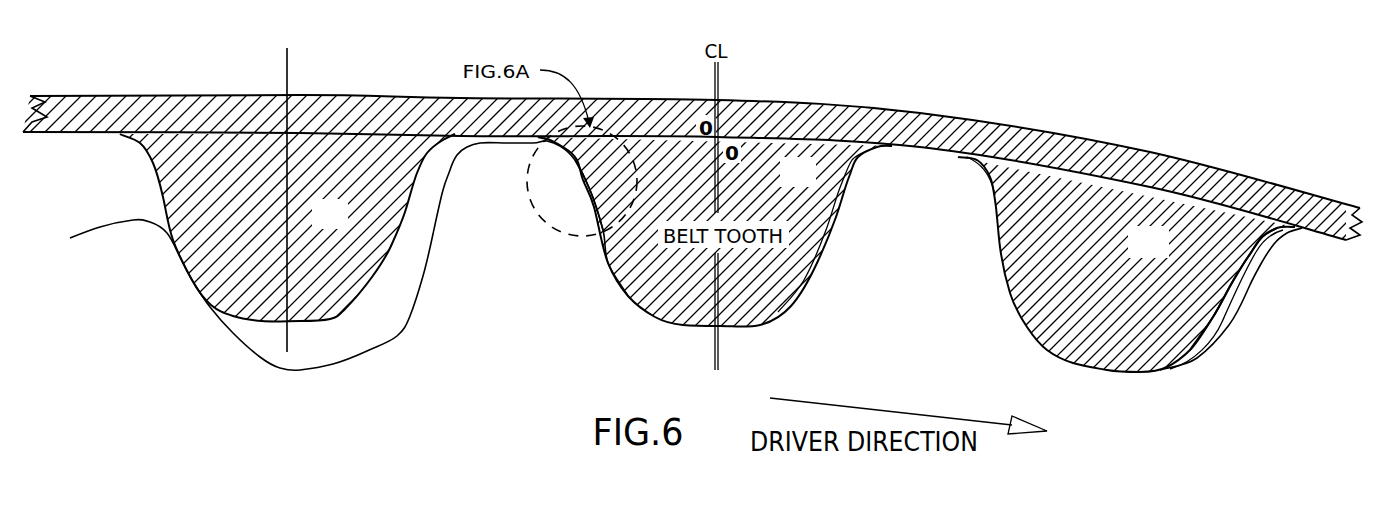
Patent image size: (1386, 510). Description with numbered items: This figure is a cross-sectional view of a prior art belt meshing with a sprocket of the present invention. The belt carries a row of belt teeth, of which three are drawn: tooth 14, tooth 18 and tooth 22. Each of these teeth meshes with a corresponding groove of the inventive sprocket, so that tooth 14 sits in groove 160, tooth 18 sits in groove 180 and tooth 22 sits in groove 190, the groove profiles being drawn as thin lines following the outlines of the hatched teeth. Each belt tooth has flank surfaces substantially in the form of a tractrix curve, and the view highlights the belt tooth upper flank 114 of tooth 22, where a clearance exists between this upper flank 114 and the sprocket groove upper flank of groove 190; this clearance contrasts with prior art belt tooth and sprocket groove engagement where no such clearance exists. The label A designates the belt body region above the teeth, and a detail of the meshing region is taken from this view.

The tooth 14 is at (785, 183).
The tooth 18 is at (317, 225).
The tooth 22 is at (1164, 254).
The groove 160 is at (624, 292).
The groove 180 is at (375, 330).
The flank surface 114 is at (1222, 299).
The groove 190 is at (1212, 343).
The belt A is at (1147, 183).